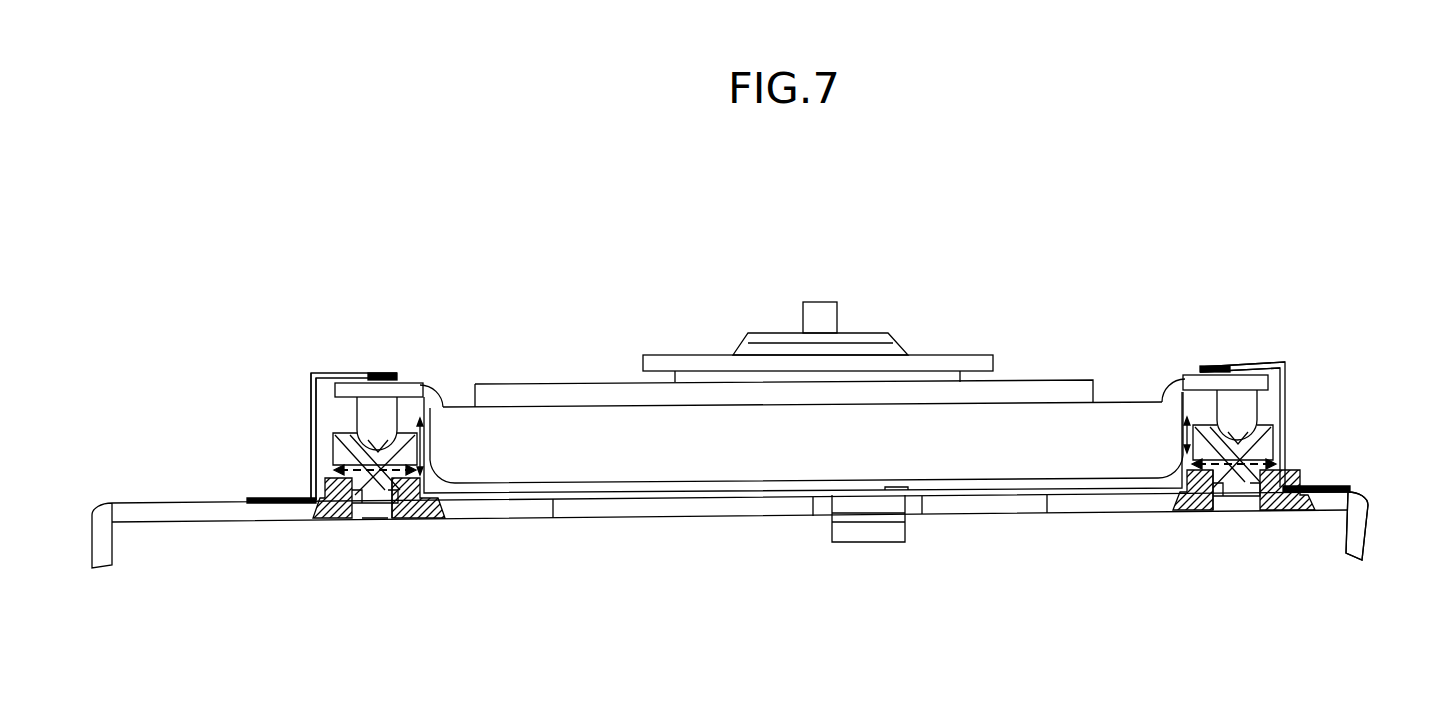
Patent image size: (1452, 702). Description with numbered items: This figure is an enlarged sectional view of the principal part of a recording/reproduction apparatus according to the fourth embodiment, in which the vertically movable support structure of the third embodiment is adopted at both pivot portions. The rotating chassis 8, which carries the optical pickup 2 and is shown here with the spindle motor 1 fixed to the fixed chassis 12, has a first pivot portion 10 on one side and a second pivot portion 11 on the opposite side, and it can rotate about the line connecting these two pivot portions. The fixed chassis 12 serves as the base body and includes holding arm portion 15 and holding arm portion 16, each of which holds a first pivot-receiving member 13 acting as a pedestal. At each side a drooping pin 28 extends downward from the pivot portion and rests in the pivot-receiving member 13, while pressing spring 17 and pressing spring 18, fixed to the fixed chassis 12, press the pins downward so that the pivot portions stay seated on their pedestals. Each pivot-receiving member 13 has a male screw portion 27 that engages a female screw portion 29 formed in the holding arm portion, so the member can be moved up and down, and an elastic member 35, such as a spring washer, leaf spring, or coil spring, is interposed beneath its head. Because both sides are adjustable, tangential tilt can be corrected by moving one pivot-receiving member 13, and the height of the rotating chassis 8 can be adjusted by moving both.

The spindle motor 1 is at (868, 341).
The optical pickup 2 is at (1052, 391).
The rotating chassis 8 is at (418, 393).
The first pivot portion 10 is at (1283, 351).
The second pivot portion 11 is at (338, 368).
The fixed chassis 12 is at (1365, 511).
The first pivot-receiving member 13 is at (347, 456).
The holding arm portion 15 is at (1328, 504).
The holding arm portion 16 is at (337, 519).
The pressing spring 17 is at (1288, 376).
The pressing spring 18 is at (310, 381).
The male screw portion 27 is at (373, 514).
The drooping pin 28 is at (367, 421).
The female screw portion 29 is at (393, 519).
The elastic member 35 is at (343, 475).